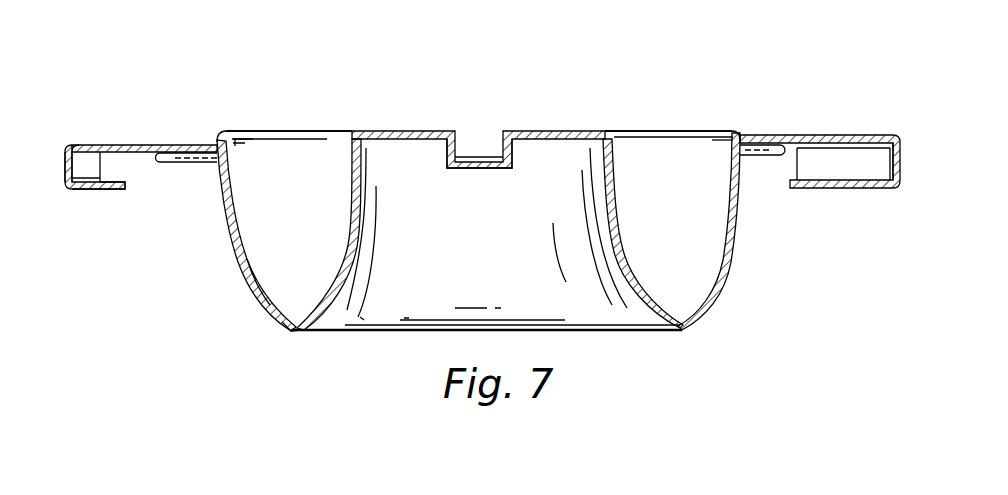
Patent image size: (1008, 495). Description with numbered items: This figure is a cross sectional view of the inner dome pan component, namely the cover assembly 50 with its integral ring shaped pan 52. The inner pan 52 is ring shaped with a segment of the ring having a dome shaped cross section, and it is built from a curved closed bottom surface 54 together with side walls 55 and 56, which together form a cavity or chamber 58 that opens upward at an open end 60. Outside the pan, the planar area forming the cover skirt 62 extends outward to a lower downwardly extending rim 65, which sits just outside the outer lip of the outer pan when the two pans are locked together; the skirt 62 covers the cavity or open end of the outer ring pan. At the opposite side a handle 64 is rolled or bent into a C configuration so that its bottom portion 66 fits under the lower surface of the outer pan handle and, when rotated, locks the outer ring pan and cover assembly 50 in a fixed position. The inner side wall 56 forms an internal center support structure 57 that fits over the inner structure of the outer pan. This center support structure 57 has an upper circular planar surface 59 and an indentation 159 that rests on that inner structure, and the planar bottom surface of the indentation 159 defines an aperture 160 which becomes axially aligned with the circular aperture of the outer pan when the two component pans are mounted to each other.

The cover assembly 50 is at (186, 325).
The ring shaped pan 52 is at (225, 228).
The curved closed bottom surface 54 is at (288, 331).
The side wall 55 is at (248, 277).
The inner side wall 56 is at (352, 171).
The internal center support structure 57 is at (562, 293).
The cavity or chamber 58 is at (304, 229).
The upper circular planar surface 59 is at (562, 130).
The open end 60 is at (665, 148).
The cover skirt 62 is at (148, 144).
The handle 64 is at (867, 134).
The lower downwardly extending rim 65 is at (66, 143).
The bottom portion 66 is at (92, 191).
The indentation 159 is at (457, 151).
The aperture 160 is at (478, 168).